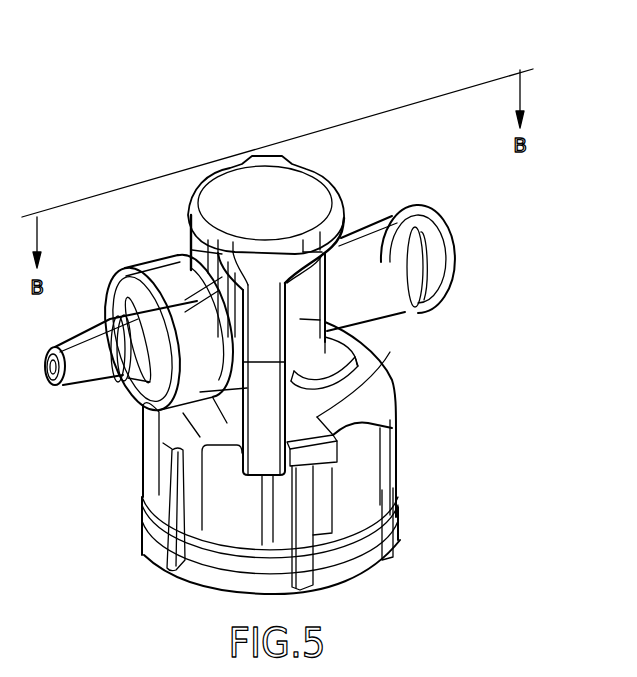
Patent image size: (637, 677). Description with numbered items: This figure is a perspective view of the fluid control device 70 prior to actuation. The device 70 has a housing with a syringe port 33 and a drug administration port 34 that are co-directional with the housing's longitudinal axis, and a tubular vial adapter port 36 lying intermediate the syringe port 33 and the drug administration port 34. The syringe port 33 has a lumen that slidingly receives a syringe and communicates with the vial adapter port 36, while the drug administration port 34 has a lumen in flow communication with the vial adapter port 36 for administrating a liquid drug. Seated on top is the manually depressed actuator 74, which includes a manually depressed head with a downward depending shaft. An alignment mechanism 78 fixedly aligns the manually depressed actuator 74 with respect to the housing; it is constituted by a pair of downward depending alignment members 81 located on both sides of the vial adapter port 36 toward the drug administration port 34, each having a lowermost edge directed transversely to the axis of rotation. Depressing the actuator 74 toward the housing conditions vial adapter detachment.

The fluid control device 70 is at (425, 74).
The alignment mechanism 78 is at (368, 161).
The manually depressed actuator 74 is at (281, 203).
The alignment members 81 is at (192, 248).
The syringe port 33 is at (370, 311).
The vial adapter port 36 is at (337, 330).
The drug administration port 34 is at (108, 364).